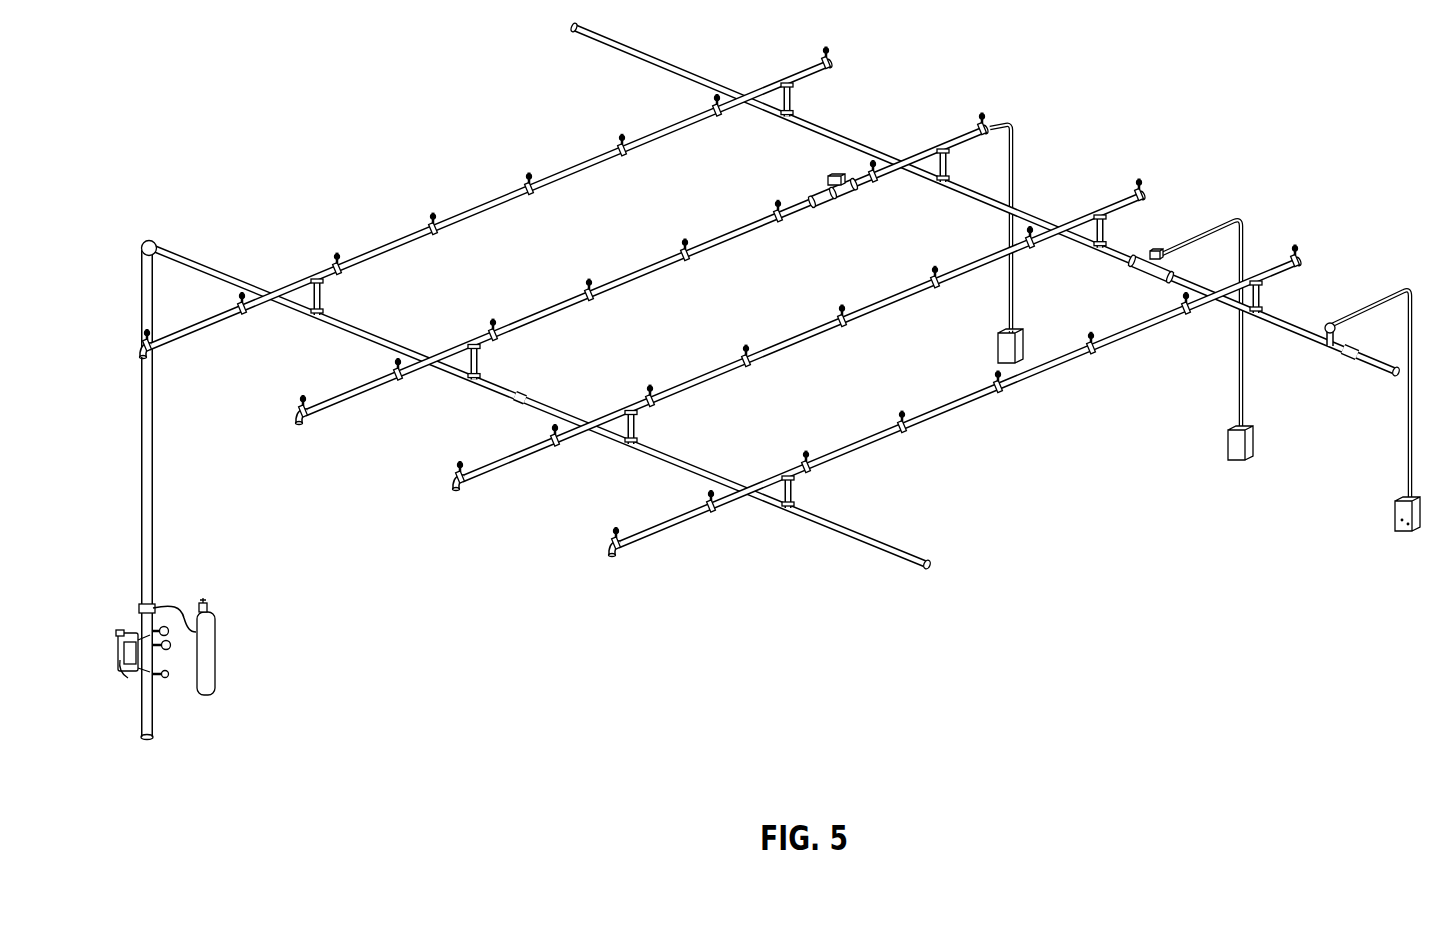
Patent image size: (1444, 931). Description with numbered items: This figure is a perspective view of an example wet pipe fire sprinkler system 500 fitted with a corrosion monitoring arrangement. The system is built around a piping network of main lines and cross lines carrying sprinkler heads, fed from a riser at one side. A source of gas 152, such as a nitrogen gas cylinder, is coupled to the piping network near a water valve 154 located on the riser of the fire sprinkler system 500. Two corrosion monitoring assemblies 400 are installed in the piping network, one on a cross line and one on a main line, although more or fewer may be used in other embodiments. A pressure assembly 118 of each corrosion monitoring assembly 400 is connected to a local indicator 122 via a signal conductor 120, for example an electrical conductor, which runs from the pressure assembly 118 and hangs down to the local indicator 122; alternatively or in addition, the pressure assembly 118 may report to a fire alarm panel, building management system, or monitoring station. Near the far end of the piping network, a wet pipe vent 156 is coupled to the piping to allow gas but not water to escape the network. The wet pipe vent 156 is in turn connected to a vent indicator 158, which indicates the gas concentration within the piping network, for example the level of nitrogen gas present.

The wet pipe fire sprinkler system 500 is at (315, 100).
The pressure assembly 118 is at (832, 172).
The signal conductor 120 is at (1014, 142).
The local indicator 122 is at (1002, 349).
The corrosion monitoring assembly 400 is at (826, 192).
The source of gas 152 is at (208, 652).
The water valve 154 is at (137, 683).
The wet pipe vent 156 is at (1328, 333).
The vent indicator 158 is at (1397, 517).